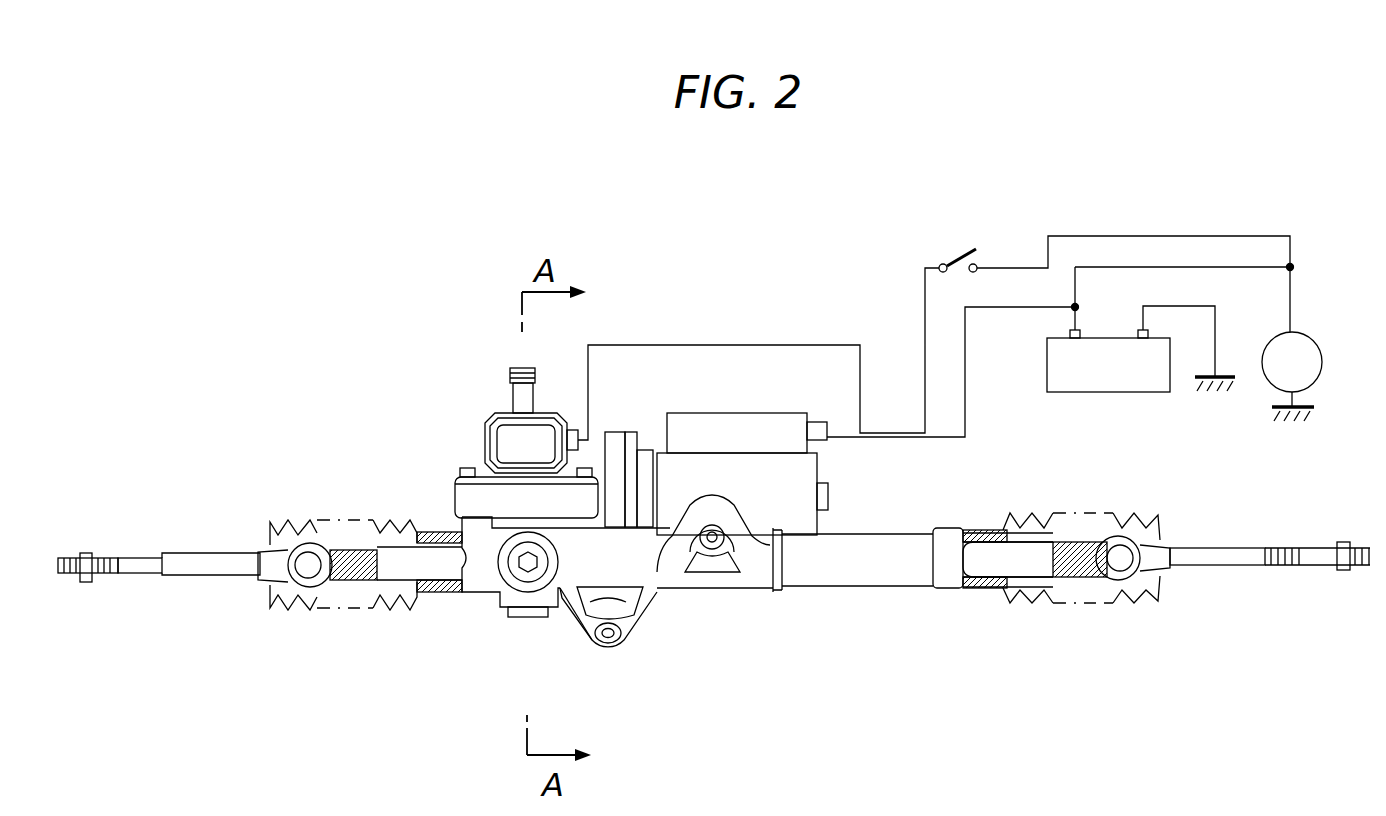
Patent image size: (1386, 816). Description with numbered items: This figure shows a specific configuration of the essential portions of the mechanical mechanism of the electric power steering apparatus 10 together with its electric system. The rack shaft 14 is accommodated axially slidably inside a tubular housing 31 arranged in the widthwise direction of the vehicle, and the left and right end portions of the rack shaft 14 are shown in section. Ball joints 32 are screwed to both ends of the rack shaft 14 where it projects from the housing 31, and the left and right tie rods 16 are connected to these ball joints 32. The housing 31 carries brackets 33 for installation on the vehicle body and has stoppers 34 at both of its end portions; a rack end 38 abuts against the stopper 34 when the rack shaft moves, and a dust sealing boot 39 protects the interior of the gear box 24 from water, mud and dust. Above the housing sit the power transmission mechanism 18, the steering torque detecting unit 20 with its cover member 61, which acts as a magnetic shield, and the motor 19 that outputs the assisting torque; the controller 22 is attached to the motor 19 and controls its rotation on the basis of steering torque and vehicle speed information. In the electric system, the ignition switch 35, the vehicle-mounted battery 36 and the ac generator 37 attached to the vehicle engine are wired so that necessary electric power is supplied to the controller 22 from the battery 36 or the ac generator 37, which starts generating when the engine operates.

The electric power steering apparatus 10 is at (470, 354).
The rack shaft 14 is at (980, 560).
The tie rods 16 is at (238, 568).
The power transmission mechanism 18 is at (462, 502).
The motor 19 is at (840, 525).
The steering torque detecting unit 20 is at (485, 450).
The controller 22 is at (714, 422).
The gear box 24 is at (571, 620).
The housing 31 is at (748, 586).
The ball joints 32 is at (317, 585).
The brackets 33 is at (712, 552).
The stoppers 34 is at (423, 597).
The ignition switch 35 is at (960, 255).
The vehicle-mounted battery 36 is at (1118, 393).
The ac generator (ACG) 37 is at (1322, 356).
The rack end 38 is at (340, 582).
The dust sealing boot 39 is at (403, 522).
The cover member 61 is at (512, 453).